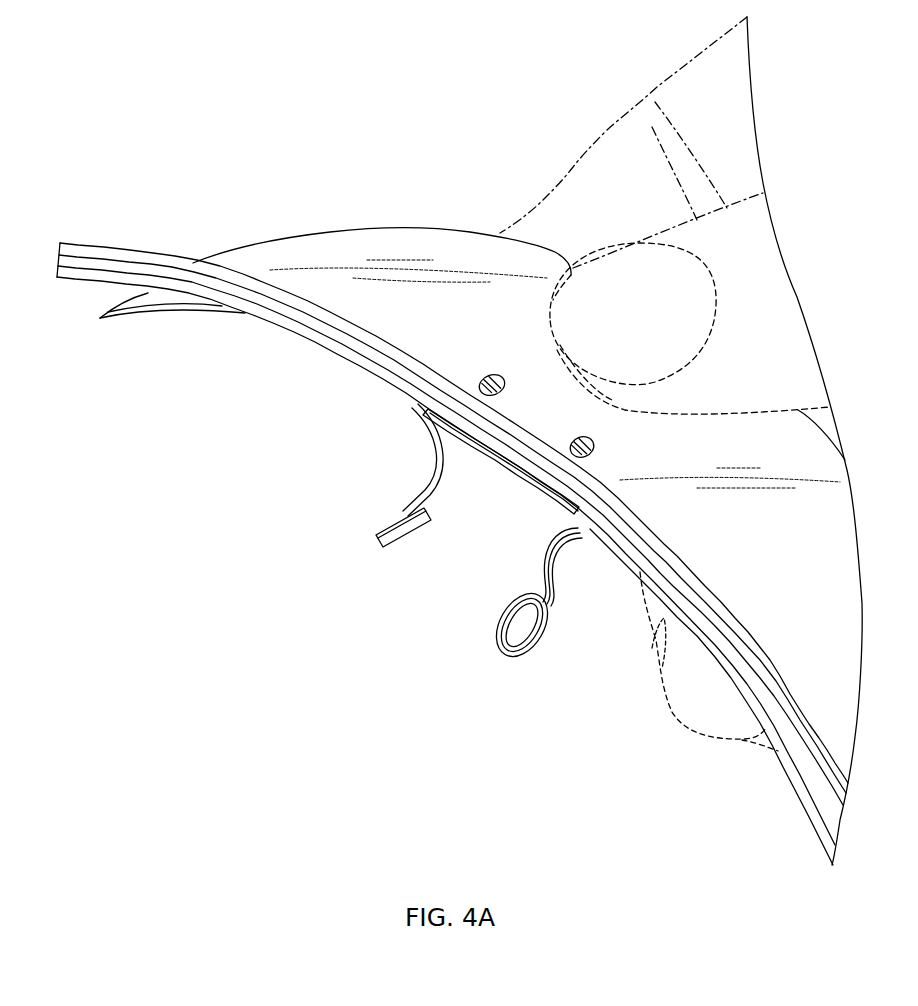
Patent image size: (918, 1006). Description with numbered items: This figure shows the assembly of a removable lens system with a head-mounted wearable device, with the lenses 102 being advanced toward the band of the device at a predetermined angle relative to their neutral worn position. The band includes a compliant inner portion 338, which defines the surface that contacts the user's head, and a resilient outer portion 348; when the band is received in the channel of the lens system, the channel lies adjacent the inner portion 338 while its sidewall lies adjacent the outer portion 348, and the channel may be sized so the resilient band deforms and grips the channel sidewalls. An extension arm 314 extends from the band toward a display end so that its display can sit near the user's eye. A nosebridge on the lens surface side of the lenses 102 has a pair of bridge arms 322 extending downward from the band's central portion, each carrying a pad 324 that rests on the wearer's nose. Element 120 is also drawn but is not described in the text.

The lens 102 is at (327, 243).
The extension arm 314 is at (317, 342).
The outer portion 348 is at (92, 252).
The inner portion 338 is at (805, 805).
The sensor bar 120 is at (532, 487).
The bridge arms 322 is at (430, 462).
The pads 324 is at (388, 523).